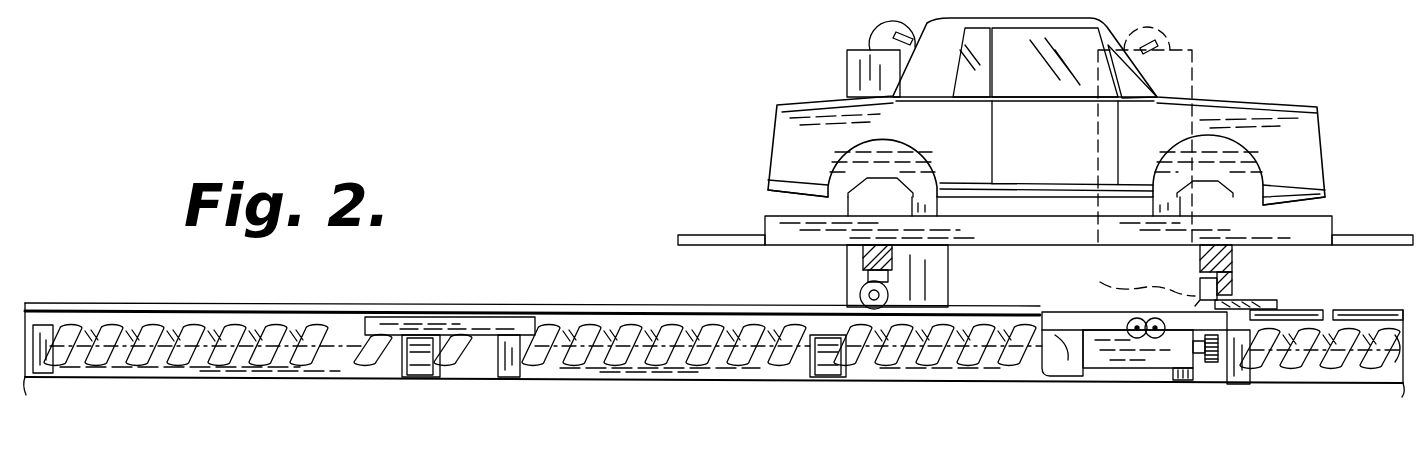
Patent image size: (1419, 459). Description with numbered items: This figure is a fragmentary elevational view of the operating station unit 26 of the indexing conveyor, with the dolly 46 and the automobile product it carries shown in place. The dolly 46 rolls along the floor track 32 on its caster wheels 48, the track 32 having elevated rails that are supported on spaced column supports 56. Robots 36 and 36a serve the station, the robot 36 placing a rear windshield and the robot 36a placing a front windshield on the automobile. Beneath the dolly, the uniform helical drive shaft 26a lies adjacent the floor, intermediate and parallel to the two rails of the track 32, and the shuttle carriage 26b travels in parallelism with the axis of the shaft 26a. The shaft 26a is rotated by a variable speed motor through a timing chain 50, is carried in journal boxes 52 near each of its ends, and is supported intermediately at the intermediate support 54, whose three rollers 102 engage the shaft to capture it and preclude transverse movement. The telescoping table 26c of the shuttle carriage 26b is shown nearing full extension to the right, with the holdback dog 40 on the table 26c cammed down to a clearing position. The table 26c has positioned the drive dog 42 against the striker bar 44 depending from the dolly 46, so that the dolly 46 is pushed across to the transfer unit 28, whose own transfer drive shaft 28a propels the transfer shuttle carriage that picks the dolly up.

The operating station unit 26 is at (356, 295).
The operating station drive shaft 26a is at (562, 330).
The operating station shuttle carriage 26b is at (1135, 355).
The telescoping table 26c is at (1312, 315).
The transfer unit 28 is at (1341, 395).
The transfer drive shaft 28a is at (1390, 364).
The floor track 32 is at (1393, 310).
The robot 36 is at (848, 50).
The robot 36a is at (1200, 60).
The holdback dog 40 is at (1262, 302).
The drive dog 42 is at (1148, 288).
The striker bar 44 is at (1232, 285).
The dolly 46 is at (1330, 228).
The caster wheels 48 is at (858, 296).
The timing chain 50 is at (1212, 365).
The journal boxes 52 is at (52, 365).
The intermediate support 54 is at (403, 366).
The column supports 56 is at (520, 370).
The rollers 102 is at (432, 378).